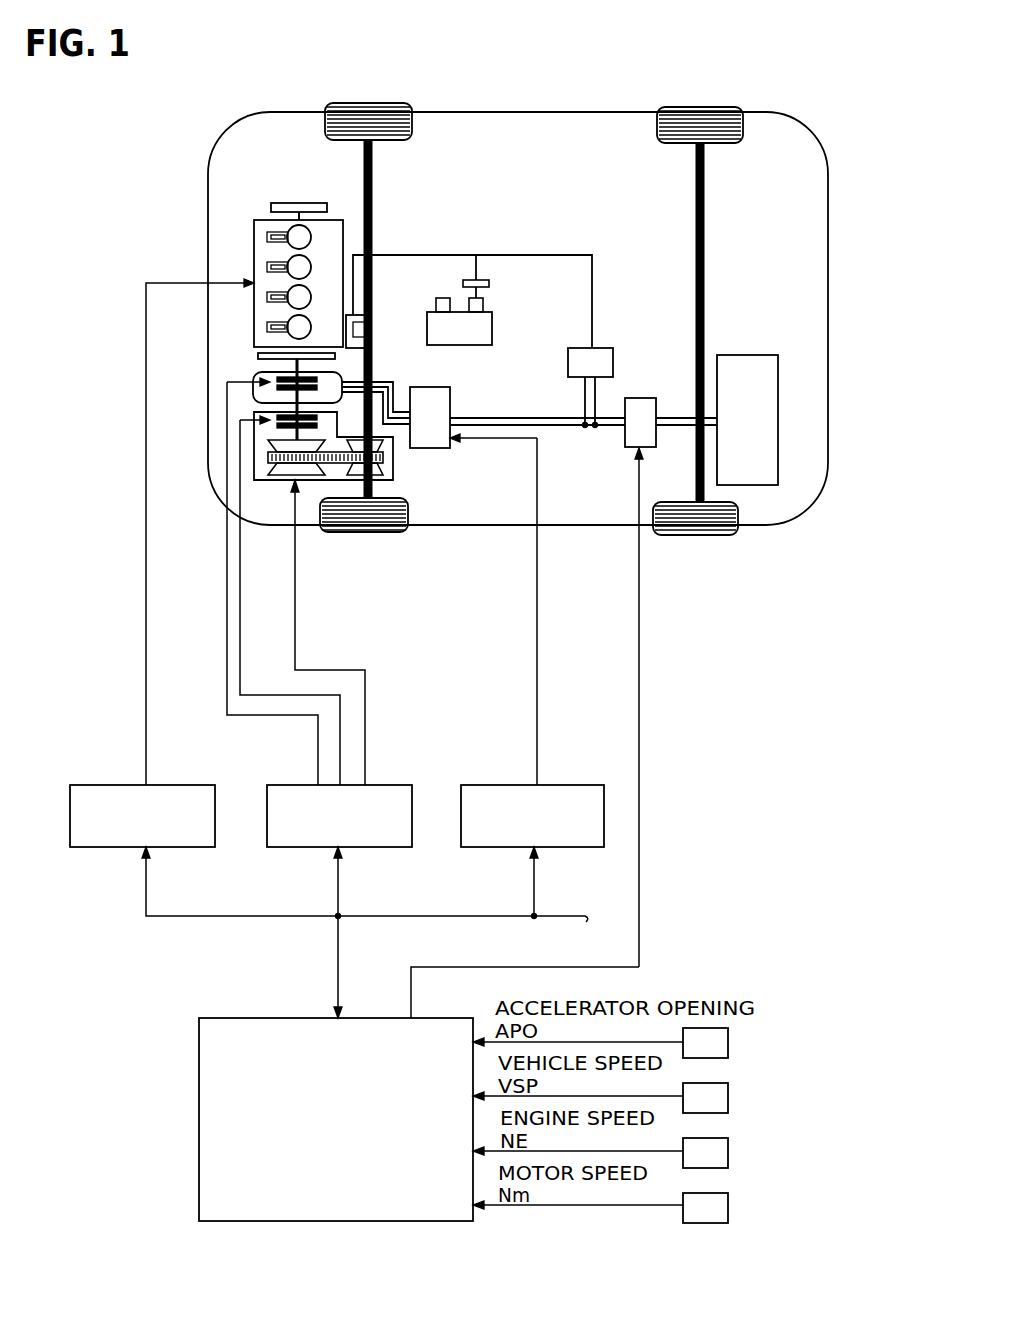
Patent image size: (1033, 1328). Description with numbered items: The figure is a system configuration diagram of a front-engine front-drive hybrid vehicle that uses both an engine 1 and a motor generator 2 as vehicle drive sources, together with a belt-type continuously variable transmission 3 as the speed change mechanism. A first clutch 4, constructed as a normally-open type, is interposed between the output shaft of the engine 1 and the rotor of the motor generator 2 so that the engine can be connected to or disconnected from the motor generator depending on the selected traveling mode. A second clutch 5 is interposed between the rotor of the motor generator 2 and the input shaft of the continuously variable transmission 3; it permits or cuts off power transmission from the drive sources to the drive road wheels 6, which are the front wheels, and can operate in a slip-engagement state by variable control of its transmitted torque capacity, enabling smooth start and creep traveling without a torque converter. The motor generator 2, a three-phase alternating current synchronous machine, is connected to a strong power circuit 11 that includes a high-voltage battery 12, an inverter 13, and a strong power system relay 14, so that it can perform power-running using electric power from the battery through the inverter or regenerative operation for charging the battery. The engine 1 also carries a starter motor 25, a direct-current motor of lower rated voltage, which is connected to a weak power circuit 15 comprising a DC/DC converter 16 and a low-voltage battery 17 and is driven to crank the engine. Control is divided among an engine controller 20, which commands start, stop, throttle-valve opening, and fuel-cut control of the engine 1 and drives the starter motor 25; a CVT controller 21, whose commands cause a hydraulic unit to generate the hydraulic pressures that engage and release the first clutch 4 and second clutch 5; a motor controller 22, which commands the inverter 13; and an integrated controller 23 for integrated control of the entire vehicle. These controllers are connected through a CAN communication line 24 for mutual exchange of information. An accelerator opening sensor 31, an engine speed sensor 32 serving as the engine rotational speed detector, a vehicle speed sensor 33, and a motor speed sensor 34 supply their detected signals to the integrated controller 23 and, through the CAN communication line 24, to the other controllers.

The engine 1 is at (258, 230).
The motor generator 2 is at (265, 393).
The belt-type continuously variable transmission 3 is at (270, 457).
The first clutch 4 is at (270, 377).
The second clutch 5 is at (272, 427).
The drive road wheels 6 is at (352, 103).
The strong power circuit 11 is at (600, 481).
The high-voltage battery 12 is at (752, 357).
The inverter 13 is at (435, 446).
The strong power system relay 14 is at (645, 397).
The weak power circuit 15 is at (560, 237).
The DC/DC converter 16 is at (603, 347).
The low-voltage battery 17 is at (485, 327).
The engine controller 20 is at (175, 788).
The CVT controller 21 is at (380, 788).
The motor controller 22 is at (577, 792).
The integrated controller 23 is at (254, 1020).
The CAN communication line 24 is at (390, 918).
The starter motor 25 is at (370, 340).
The accelerator opening sensor 31 is at (728, 1045).
The engine speed sensor 32 is at (728, 1155).
The vehicle speed sensor 33 is at (728, 1100).
The motor speed sensor 34 is at (728, 1210).